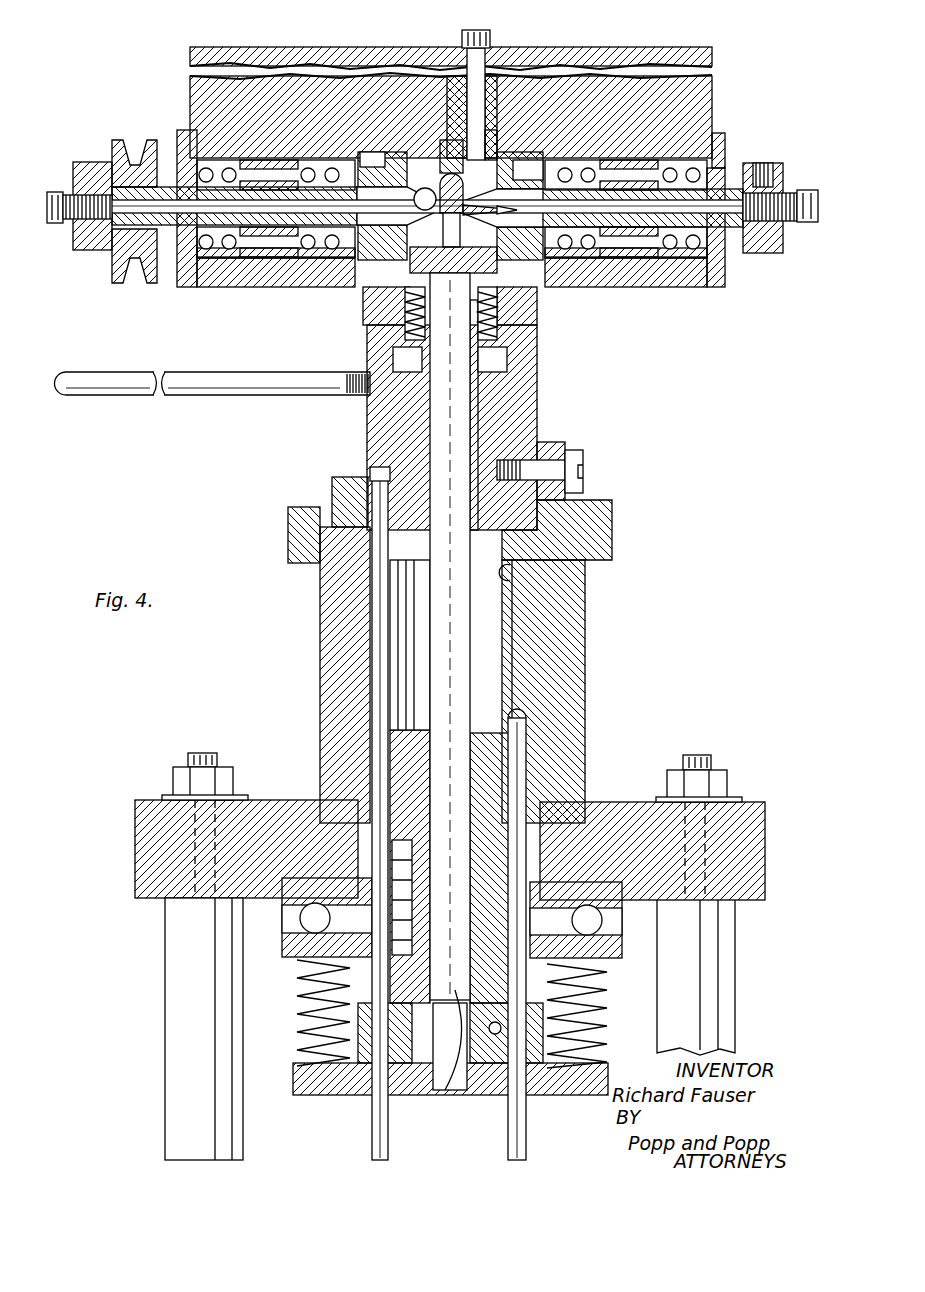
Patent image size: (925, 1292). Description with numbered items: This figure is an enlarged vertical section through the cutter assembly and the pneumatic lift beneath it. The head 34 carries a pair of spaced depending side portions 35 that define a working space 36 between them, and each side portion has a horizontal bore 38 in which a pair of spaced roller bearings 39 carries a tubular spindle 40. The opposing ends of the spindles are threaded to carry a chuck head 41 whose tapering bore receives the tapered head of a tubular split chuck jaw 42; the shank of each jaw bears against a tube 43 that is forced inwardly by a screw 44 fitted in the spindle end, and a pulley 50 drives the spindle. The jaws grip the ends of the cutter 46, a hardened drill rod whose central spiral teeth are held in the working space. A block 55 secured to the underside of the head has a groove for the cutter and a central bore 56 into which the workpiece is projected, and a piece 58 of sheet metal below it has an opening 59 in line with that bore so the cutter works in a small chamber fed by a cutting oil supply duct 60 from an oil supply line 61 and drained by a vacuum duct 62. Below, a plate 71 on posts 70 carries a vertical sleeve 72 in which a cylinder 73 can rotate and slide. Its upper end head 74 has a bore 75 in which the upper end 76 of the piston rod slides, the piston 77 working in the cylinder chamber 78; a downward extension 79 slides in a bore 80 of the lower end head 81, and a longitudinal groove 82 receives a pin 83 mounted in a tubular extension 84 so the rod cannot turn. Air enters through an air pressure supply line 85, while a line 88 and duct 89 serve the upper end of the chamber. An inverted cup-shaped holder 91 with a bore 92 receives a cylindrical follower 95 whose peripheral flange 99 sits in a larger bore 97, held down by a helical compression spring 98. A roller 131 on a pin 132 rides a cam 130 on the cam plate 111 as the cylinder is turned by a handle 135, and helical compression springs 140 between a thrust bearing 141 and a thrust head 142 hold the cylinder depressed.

The head 34 is at (698, 82).
The side portions 35 is at (245, 260).
The working space 36 is at (352, 290).
The horizontal bore 38 is at (215, 262).
The roller bearings 39 is at (306, 166).
The tubular spindle 40 is at (735, 190).
The chuck head 41 is at (378, 150).
The tubular split chuck jaw 42 is at (372, 152).
The tube 43 is at (120, 214).
The screw 44 is at (55, 224).
The cutter 46 is at (528, 160).
The pulley 50 is at (112, 150).
The block 55 is at (500, 140).
The central bore 56 is at (428, 188).
The piece of sheet metal 58 is at (492, 216).
The opening 59 is at (443, 231).
The cutting oil supply duct 60 is at (486, 140).
The oil supply line 61 is at (490, 40).
The vacuum duct 62 is at (448, 168).
The posts 70 is at (165, 988).
The plate 71 is at (756, 846).
The vertical sleeve 72 is at (580, 653).
The cylinder 73 is at (540, 621).
The upper end head 74 is at (510, 389).
The bore 75 is at (476, 419).
The upper end of piston rod 76 is at (445, 429).
The piston 77 is at (560, 528).
The cylinder chamber 78 is at (514, 580).
The downward extension of piston rod 79 is at (440, 629).
The bore 80 is at (468, 736).
The lower end head 81 is at (500, 752).
The longitudinal groove 82 is at (435, 775).
The pin 83 is at (448, 1093).
The tubular extension 84 is at (483, 1096).
The air pressure supply line 85 is at (526, 1139).
The line 88 is at (372, 1139).
The duct 89 is at (372, 591).
The inverted cup-shaped holder 91 is at (372, 290).
The bore 92 is at (412, 265).
The cylindrical follower 95 is at (498, 220).
The larger bore 97 is at (407, 359).
The helical compression spring 98 is at (498, 300).
The peripheral flange 99 is at (492, 359).
The cam plate 111 is at (288, 526).
The cam 130 is at (348, 480).
The roller 131 is at (566, 450).
The pin 132 is at (584, 471).
The handle 135 is at (108, 398).
The helical compression springs 140 is at (297, 1021).
The thrust bearing 141 is at (634, 950).
The thrust head 142 is at (297, 1095).